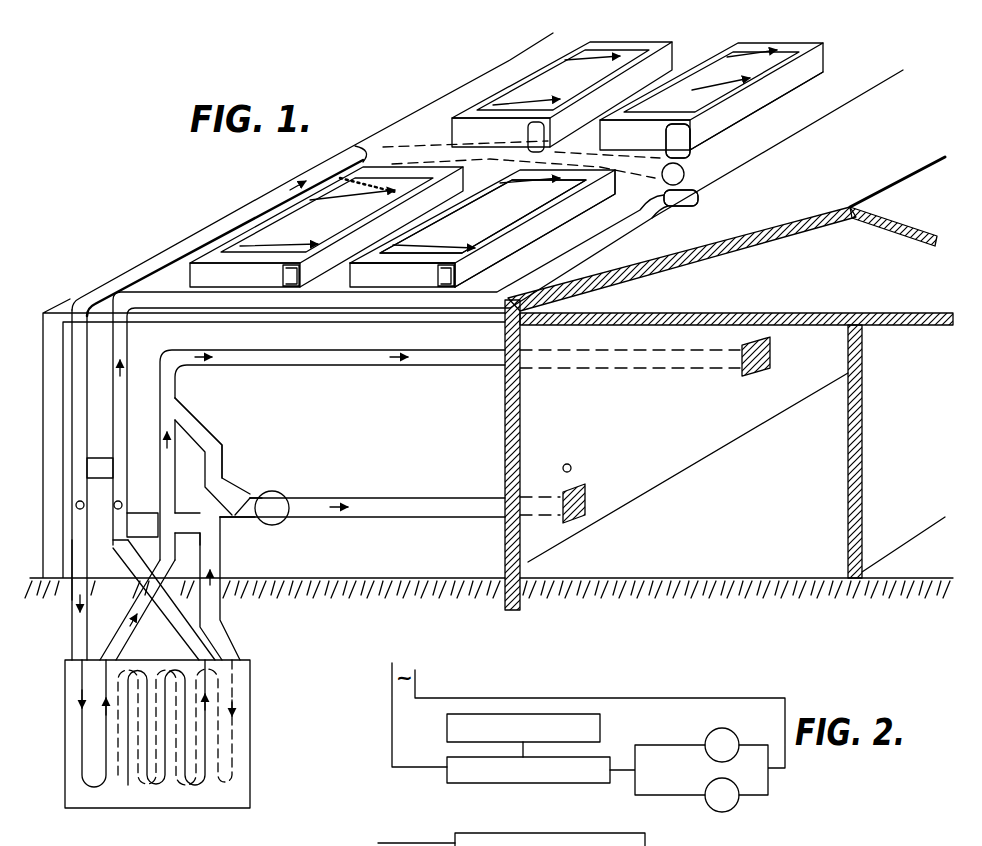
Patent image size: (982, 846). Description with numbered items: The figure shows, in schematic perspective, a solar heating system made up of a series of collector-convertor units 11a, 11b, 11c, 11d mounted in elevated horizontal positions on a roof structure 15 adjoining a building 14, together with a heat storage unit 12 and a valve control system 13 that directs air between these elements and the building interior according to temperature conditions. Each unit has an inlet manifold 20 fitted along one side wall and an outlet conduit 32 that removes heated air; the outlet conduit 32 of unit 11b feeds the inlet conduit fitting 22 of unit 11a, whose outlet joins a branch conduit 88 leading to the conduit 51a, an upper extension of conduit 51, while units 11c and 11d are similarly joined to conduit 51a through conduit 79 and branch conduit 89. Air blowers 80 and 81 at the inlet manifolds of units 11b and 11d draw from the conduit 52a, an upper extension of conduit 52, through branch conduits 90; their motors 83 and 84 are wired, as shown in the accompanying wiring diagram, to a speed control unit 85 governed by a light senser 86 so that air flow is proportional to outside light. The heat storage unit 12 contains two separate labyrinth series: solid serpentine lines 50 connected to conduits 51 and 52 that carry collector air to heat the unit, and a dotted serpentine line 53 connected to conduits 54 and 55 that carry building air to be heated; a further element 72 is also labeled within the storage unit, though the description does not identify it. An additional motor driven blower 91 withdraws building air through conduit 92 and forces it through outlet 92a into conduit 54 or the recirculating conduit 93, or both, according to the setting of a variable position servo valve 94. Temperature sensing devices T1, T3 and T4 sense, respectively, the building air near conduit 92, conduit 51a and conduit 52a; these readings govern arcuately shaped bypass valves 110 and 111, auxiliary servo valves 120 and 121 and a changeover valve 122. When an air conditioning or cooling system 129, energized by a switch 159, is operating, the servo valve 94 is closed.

In FIG. 1, the collector-convertor unit 11a is at (268, 203).
In FIG. 1, the collector-convertor unit 11b is at (578, 244).
In FIG. 1, the collector-convertor unit 11c is at (563, 52).
In FIG. 1, the collector-convertor unit 11d is at (803, 35).
In FIG. 1, the inlet manifold 20 is at (432, 262).
In FIG. 1, the inlet conduit fitting 22 is at (446, 188).
In FIG. 1, the outlet conduit 32 is at (538, 233).
In FIG. 1, the branch conduit 88 is at (378, 191).
In FIG. 1, the branch conduit 89 is at (387, 147).
In FIG. 1, the conduit 79 is at (545, 133).
In FIG. 1, the air blower 81 is at (692, 143).
In FIG. 1, the motor 84 is at (678, 141).
In FIG. 2, the motor 84 is at (738, 806).
In FIG. 1, the branch conduit 90 is at (686, 172).
In FIG. 1, the air blower 80 is at (689, 199).
In FIG. 1, the motor 83 is at (681, 198).
In FIG. 2, the motor 83 is at (735, 738).
In FIG. 1, the conduit 52a is at (317, 309).
In FIG. 1, the conduit 51a is at (206, 223).
In FIG. 1, the conduit 51 is at (72, 638).
In FIG. 1, the roof structure 15 is at (204, 311).
In FIG. 1, the conduit 93 is at (230, 375).
In FIG. 1, the valve control system 13 is at (224, 431).
In FIG. 1, the conduit 92 is at (430, 498).
In FIG. 1, the motor driven blower 91 is at (289, 500).
In FIG. 1, the outlet 92a is at (268, 493).
In FIG. 1, the variable position servo valve 94 is at (253, 486).
In FIG. 1, the changeover valve 122 is at (198, 520).
In FIG. 1, the conduit 54 is at (247, 653).
In FIG. 1, the auxiliary servo valve 120 is at (86, 467).
In FIG. 1, the temperature sensing device T4 is at (107, 496).
In FIG. 1, the temperature sensing device T3 is at (76, 505).
In FIG. 1, the temperature sensing device T1 is at (582, 460).
In FIG. 1, the auxiliary servo valve 121 is at (143, 506).
In FIG. 1, the bypass valve 110 is at (70, 552).
In FIG. 1, the bypass valve 111 is at (132, 540).
In FIG. 1, the conduit 55 is at (126, 648).
In FIG. 1, the conduit 52 is at (187, 641).
In FIG. 1, the heat storage unit 12 is at (258, 717).
In FIG. 1, the heat exchange coil 72 is at (150, 786).
In FIG. 1, the solid serpentine lines 50 is at (205, 790).
In FIG. 1, the dotted serpentine line 53 is at (240, 777).
In FIG. 1, the building 14 is at (504, 444).
In FIG. 2, the light senser 86 is at (602, 728).
In FIG. 2, the speed control unit 85 is at (568, 780).
In FIG. 2, the switch 159 is at (418, 843).
In FIG. 2, the air conditioning or cooling system 129 is at (652, 845).